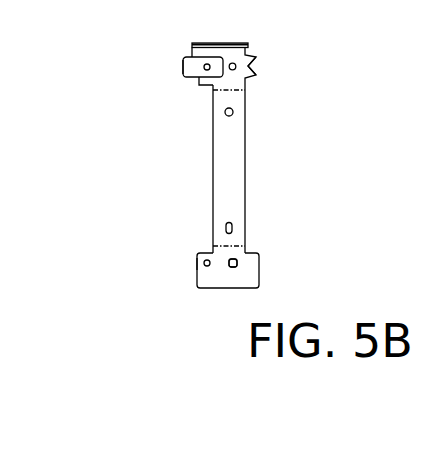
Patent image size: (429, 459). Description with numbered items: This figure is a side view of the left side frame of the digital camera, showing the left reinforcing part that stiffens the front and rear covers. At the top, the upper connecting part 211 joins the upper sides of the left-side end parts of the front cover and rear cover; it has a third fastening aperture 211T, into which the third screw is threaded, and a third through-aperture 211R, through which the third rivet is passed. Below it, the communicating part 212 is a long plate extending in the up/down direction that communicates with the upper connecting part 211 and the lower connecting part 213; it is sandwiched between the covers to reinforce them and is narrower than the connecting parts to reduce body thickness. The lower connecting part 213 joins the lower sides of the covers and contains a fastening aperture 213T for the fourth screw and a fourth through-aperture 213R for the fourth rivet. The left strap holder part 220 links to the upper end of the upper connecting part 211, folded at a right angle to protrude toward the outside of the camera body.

The left strap holder part 220 is at (215, 43).
The upper connecting part 211 is at (184, 70).
The third fastening aperture 211T is at (197, 77).
The third through-aperture 211R is at (250, 66).
The communicating part 212 is at (212, 160).
The lower connecting part 213 is at (197, 275).
The lower tab 213T is at (196, 260).
The fourth through-aperture 213R is at (240, 263).